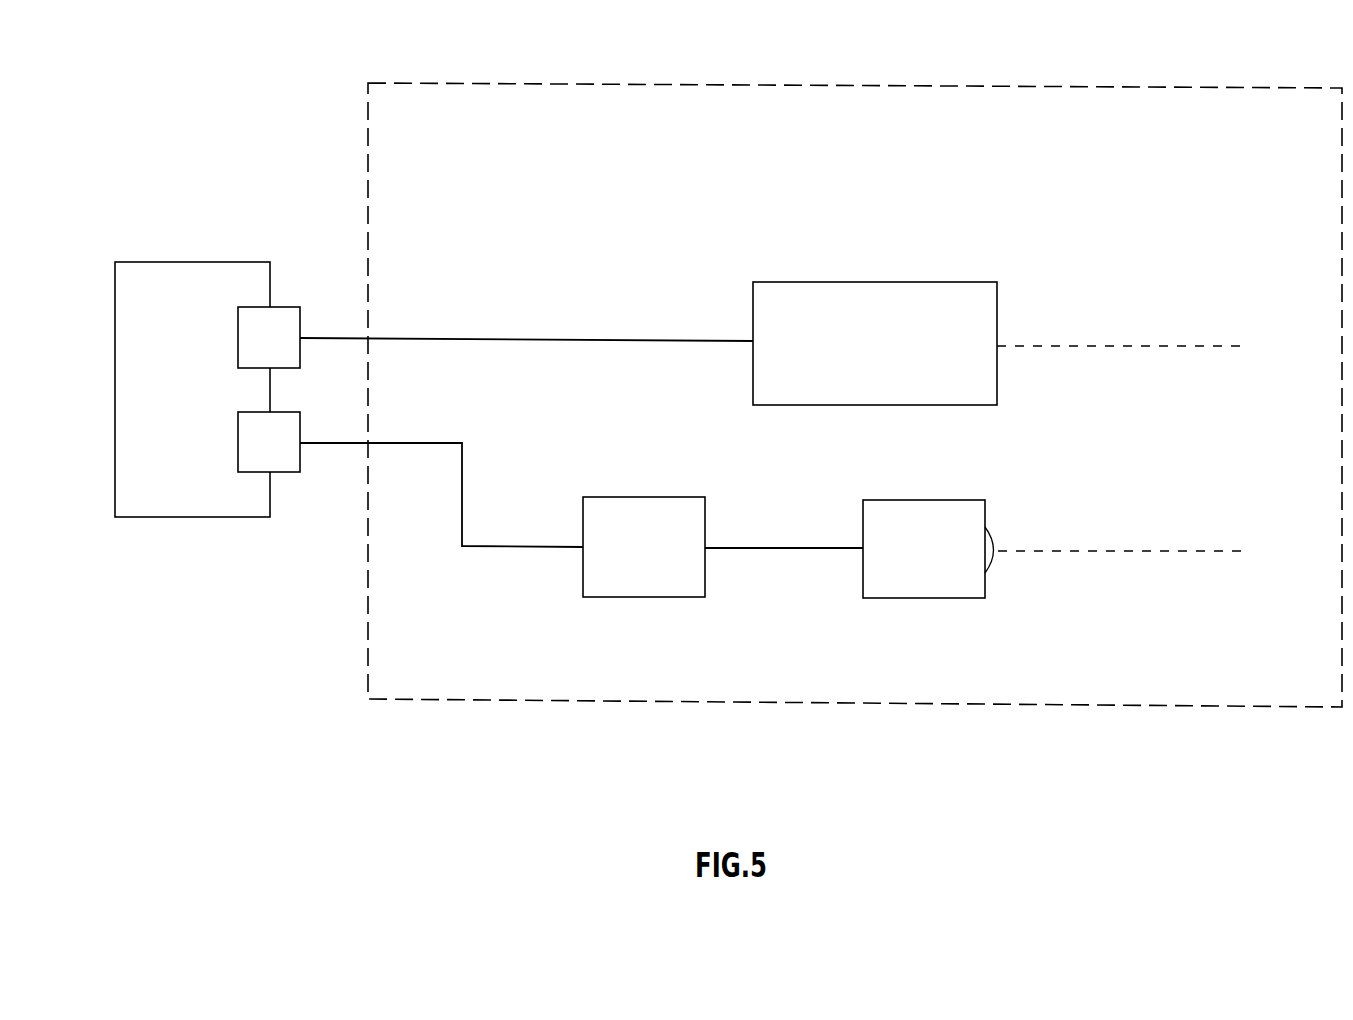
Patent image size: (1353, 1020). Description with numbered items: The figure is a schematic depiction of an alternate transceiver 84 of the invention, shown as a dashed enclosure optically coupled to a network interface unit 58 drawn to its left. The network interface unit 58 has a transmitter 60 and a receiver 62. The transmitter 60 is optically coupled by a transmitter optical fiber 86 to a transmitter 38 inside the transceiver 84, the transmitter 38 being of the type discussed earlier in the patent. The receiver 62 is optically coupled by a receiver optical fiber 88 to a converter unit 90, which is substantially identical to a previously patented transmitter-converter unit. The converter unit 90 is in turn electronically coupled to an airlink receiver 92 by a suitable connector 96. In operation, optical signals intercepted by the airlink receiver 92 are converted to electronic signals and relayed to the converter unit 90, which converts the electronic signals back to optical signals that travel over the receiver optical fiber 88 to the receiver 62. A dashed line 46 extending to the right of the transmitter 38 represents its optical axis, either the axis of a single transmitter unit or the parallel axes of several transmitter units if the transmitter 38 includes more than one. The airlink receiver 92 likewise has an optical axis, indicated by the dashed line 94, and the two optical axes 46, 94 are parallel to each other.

The transmitter 38 is at (859, 356).
The dashed line (optical axis of transmitter) 46 is at (1172, 346).
The network interface unit 58 is at (179, 405).
The transmitter (of network interface unit) 60 is at (253, 352).
The receiver (of network interface unit) 62 is at (253, 457).
The alternate transceiver 84 is at (1256, 88).
The transmitter optical fiber 86 is at (436, 338).
The receiver optical fiber 88 is at (422, 443).
The converter unit 90 is at (628, 561).
The airlink receiver 92 is at (907, 563).
The optical axis of airlink receiver 94 is at (1173, 551).
The connector 96 is at (781, 548).